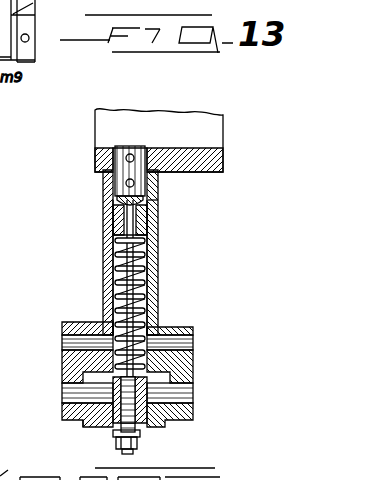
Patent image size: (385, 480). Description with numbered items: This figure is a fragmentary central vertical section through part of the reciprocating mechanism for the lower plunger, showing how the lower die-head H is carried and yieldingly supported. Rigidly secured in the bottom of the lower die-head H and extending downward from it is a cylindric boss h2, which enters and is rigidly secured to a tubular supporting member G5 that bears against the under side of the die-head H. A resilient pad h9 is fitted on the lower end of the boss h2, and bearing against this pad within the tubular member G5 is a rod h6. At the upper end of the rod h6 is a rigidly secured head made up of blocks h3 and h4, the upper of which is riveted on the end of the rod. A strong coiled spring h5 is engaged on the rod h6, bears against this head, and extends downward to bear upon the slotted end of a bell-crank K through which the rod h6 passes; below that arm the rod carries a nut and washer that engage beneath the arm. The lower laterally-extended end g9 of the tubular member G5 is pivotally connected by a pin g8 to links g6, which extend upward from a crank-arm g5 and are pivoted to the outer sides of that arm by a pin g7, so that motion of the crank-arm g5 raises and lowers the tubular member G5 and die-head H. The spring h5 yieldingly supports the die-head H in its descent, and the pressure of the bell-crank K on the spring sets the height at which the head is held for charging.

The lower die-head H is at (223, 152).
The cylindric boss h2 is at (118, 183).
The head block h3 is at (112, 210).
The head block h4 is at (112, 236).
The coiled spring h5 is at (158, 276).
The rod h6 is at (140, 437).
The resilient pad h9 is at (158, 203).
The tubular supporting member G5 is at (158, 213).
The crank-arm g5 is at (172, 450).
The link g6 is at (216, 360).
The pin g7 is at (212, 406).
The pin g8 is at (218, 325).
The laterally-extended end g9 is at (160, 325).
The bell-crank K is at (107, 428).